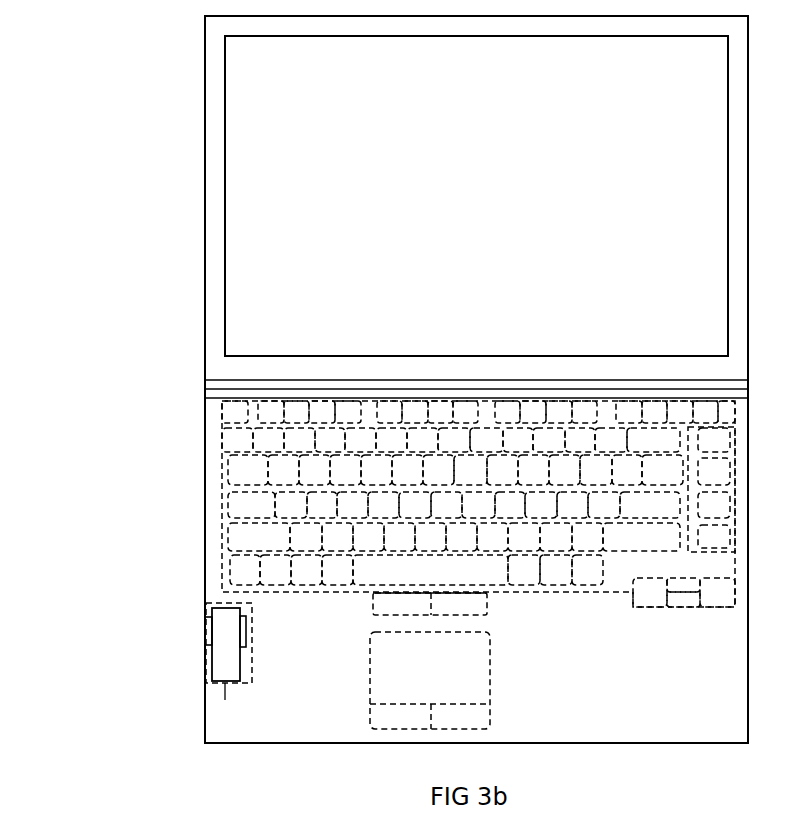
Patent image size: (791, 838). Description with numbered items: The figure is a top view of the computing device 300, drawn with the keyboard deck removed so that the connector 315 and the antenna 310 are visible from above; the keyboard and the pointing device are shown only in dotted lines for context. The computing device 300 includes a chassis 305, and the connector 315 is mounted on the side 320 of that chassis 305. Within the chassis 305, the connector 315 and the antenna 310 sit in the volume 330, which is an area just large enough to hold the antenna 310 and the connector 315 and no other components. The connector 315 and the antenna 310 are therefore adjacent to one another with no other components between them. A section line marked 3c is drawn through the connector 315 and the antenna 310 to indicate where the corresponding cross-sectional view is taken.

The computing device 300 is at (142, 420).
The chassis 305 is at (335, 716).
The antenna 310 is at (228, 669).
The connector 315 is at (207, 641).
The side 320 is at (205, 507).
The volume 330 is at (225, 700).
The section line 3c is at (265, 627).